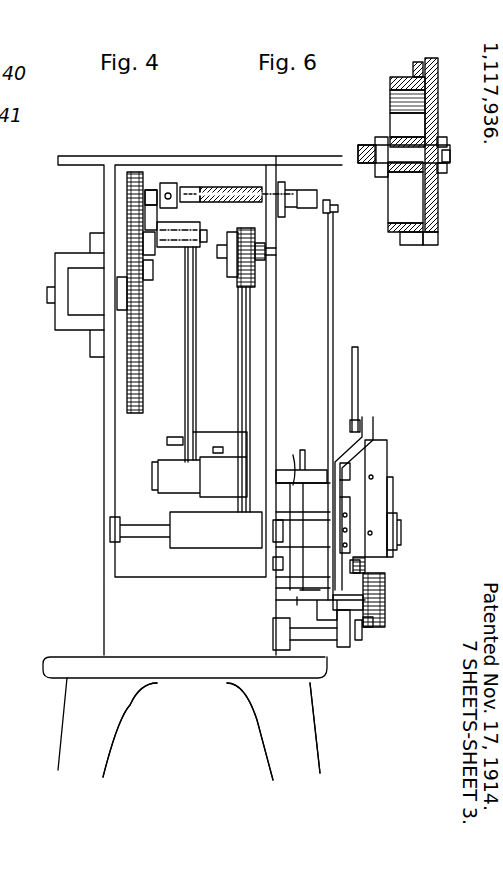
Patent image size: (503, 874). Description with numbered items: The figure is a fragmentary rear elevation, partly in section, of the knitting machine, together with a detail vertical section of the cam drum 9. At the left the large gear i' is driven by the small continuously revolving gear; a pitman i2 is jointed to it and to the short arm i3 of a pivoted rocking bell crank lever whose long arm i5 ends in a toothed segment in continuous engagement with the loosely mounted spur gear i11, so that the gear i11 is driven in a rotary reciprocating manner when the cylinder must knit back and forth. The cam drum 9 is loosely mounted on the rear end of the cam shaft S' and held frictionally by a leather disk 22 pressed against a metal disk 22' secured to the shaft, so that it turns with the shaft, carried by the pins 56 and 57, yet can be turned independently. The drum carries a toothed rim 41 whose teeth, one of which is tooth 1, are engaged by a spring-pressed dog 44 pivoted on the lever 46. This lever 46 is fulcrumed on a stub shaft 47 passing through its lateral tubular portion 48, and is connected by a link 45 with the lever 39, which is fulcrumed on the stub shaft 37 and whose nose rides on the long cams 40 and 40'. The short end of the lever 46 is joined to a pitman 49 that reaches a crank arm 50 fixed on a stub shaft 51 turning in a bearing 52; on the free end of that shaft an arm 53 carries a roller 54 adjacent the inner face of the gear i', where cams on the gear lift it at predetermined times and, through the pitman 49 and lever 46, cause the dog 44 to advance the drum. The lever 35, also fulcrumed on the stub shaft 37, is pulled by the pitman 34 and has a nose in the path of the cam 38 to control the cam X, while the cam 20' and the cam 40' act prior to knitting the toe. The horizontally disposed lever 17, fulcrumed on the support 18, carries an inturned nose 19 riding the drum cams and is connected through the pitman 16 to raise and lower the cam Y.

In FIG. 4, the tooth 1 is at (180, 242).
In FIG. 4, the cam drum 9 is at (333, 494).
In FIG. 6, the cam drum 9 is at (390, 228).
In FIG. 4, the pitman 16 is at (330, 641).
In FIG. 4, the horizontally disposed lever 17 is at (350, 656).
In FIG. 4, the support 18 is at (320, 644).
In FIG. 4, the inturned nose 19 is at (350, 622).
In FIG. 4, the cam 20' is at (382, 525).
In FIG. 6, the leather disk 22 is at (455, 128).
In FIG. 6, the metal disk 22' is at (455, 187).
In FIG. 4, the pitman 34 is at (358, 368).
In FIG. 4, the lever 35 is at (333, 440).
In FIG. 4, the stub shaft 37 is at (343, 470).
In FIG. 4, the cam 38 is at (378, 623).
In FIG. 4, the lever 39 is at (341, 488).
In FIG. 4, the cam 40 is at (401, 517).
In FIG. 6, the cam 40 is at (413, 134).
In FIG. 4, the cam 40' is at (387, 653).
In FIG. 6, the cam 40' is at (403, 265).
In FIG. 6, the toothed rim 41 is at (430, 246).
In FIG. 4, the dog 44 is at (398, 546).
In FIG. 4, the link 45 is at (297, 603).
In FIG. 4, the lever 46 is at (365, 568).
In FIG. 4, the stub shaft 47 is at (290, 591).
In FIG. 4, the lateral tubular portion 48 is at (386, 591).
In FIG. 4, the pitman 49 is at (334, 286).
In FIG. 4, the crank arm 50 is at (315, 195).
In FIG. 4, the stub shaft 51 is at (225, 194).
In FIG. 4, the bearing 52 is at (193, 187).
In FIG. 4, the arm 53 is at (170, 184).
In FIG. 4, the roller 54 is at (150, 192).
In FIG. 4, the pin 56 is at (335, 518).
In FIG. 4, the pin 57 is at (293, 517).
In FIG. 6, the cam shaft S' is at (397, 144).
In FIG. 4, the large gear i' is at (109, 310).
In FIG. 4, the pitman i2 is at (190, 352).
In FIG. 4, the short arm i3 is at (199, 464).
In FIG. 4, the long arm i5 is at (240, 300).
In FIG. 4, the spur gear i11 is at (265, 250).